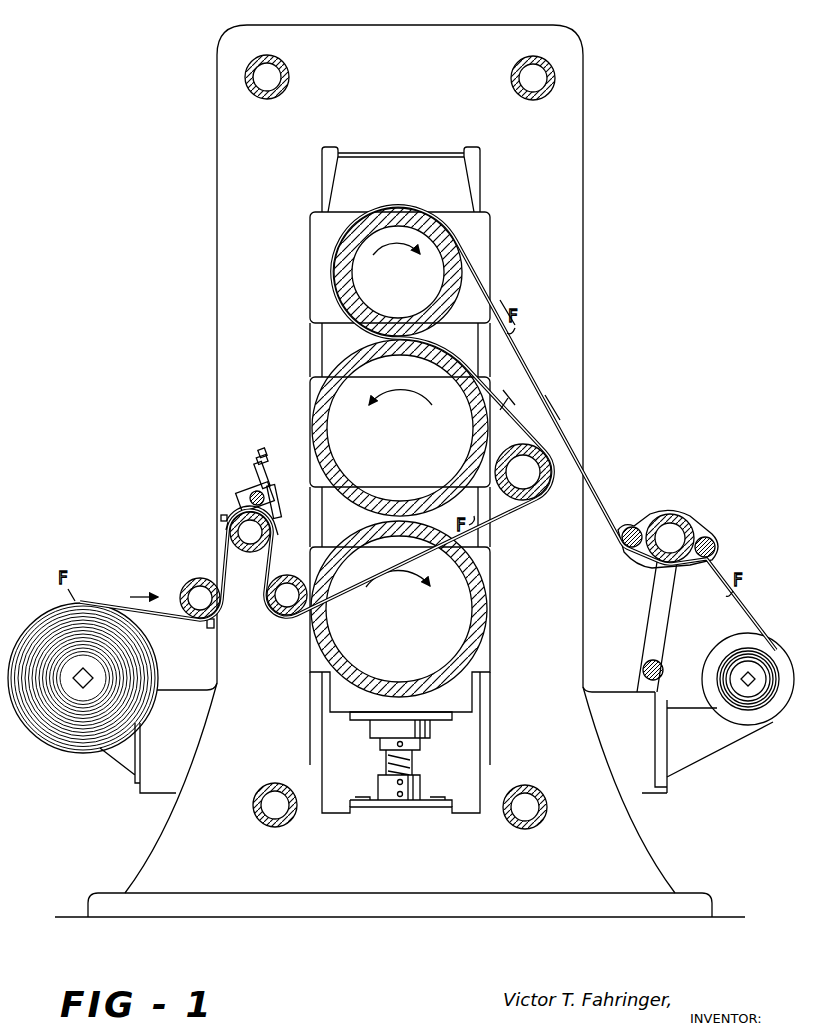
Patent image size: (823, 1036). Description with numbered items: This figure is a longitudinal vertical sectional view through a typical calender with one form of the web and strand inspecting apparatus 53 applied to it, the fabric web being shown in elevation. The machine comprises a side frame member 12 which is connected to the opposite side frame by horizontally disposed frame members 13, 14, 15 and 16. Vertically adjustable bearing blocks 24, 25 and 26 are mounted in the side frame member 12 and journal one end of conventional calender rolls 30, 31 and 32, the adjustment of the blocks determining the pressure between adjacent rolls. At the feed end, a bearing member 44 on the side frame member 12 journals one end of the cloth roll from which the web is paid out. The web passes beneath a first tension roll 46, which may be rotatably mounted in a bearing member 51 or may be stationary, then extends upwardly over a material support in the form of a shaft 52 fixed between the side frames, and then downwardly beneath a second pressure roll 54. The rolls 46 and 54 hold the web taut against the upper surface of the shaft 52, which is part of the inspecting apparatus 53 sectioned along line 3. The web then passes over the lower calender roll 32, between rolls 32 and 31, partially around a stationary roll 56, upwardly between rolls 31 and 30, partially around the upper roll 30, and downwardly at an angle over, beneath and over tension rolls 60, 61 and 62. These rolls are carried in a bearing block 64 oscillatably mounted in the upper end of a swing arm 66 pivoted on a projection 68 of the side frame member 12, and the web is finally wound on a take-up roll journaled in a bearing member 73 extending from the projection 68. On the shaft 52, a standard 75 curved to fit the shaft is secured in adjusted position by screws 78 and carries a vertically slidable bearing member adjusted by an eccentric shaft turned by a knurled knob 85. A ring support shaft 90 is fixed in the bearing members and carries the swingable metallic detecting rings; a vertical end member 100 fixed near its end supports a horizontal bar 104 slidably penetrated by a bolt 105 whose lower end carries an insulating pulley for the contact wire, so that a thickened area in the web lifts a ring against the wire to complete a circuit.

The section line indicator 3 is at (211, 418).
The side frame member 12 is at (583, 310).
The horizontally disposed frame member 13 is at (282, 826).
The horizontally disposed frame member 14 is at (520, 828).
The horizontally disposed frame member 15 is at (290, 72).
The horizontally disposed frame member 16 is at (511, 78).
The bearing block 24 is at (490, 270).
The bearing block 25 is at (309, 388).
The bearing block 26 is at (490, 665).
The upper calender roll 30 is at (348, 272).
The middle calender roll 31 is at (468, 406).
The lower calender roll 32 is at (470, 583).
The bearing member 44 is at (112, 769).
The first tension roll 46 is at (186, 584).
The bearing member 51 is at (215, 626).
The shaft 52 is at (250, 553).
The web and strand inspecting apparatus 53 is at (277, 513).
The second pressure roll 54 is at (292, 579).
The stationary roll 56 is at (541, 496).
The tension roll 60 is at (634, 527).
The tension roll 61 is at (673, 514).
The tension roll 62 is at (714, 543).
The bearing block 64 is at (694, 561).
The swing arm 66 is at (647, 612).
The projection 68 is at (643, 795).
The bearing member 73 is at (705, 758).
The standard 75 is at (275, 491).
The screw 78 is at (221, 519).
The knurled knob 85 is at (237, 490).
The ring support shaft 90 is at (249, 500).
The end member 100 is at (256, 479).
The horizontally disposed bar 104 is at (262, 461).
The bolt 105 is at (268, 452).